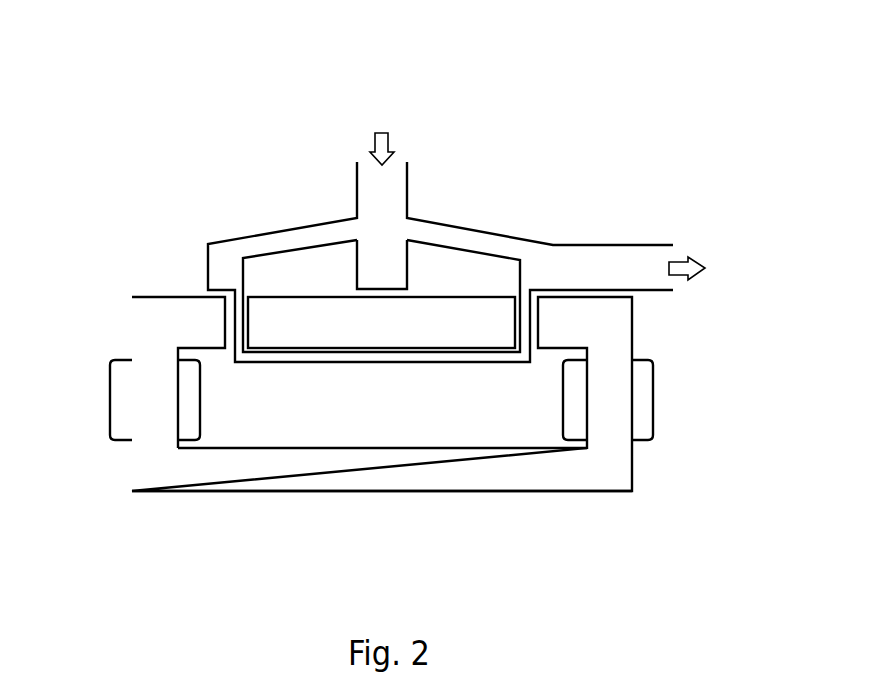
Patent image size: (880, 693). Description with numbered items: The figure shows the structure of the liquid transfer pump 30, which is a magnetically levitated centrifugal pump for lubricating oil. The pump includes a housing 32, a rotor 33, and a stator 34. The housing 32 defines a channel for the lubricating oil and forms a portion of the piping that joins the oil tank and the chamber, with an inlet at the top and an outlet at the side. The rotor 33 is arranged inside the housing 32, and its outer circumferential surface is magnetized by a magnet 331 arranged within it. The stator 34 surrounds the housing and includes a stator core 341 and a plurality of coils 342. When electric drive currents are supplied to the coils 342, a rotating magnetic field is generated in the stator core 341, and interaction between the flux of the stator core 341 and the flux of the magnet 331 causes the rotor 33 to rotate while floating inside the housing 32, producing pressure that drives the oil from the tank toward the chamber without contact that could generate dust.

The liquid transfer pump 30 is at (268, 125).
The housing 32 is at (465, 227).
The rotor 33 is at (315, 270).
The magnet 331 is at (390, 325).
The stator 34 is at (657, 466).
The stator core 341 is at (523, 472).
The coils 342 is at (123, 393).